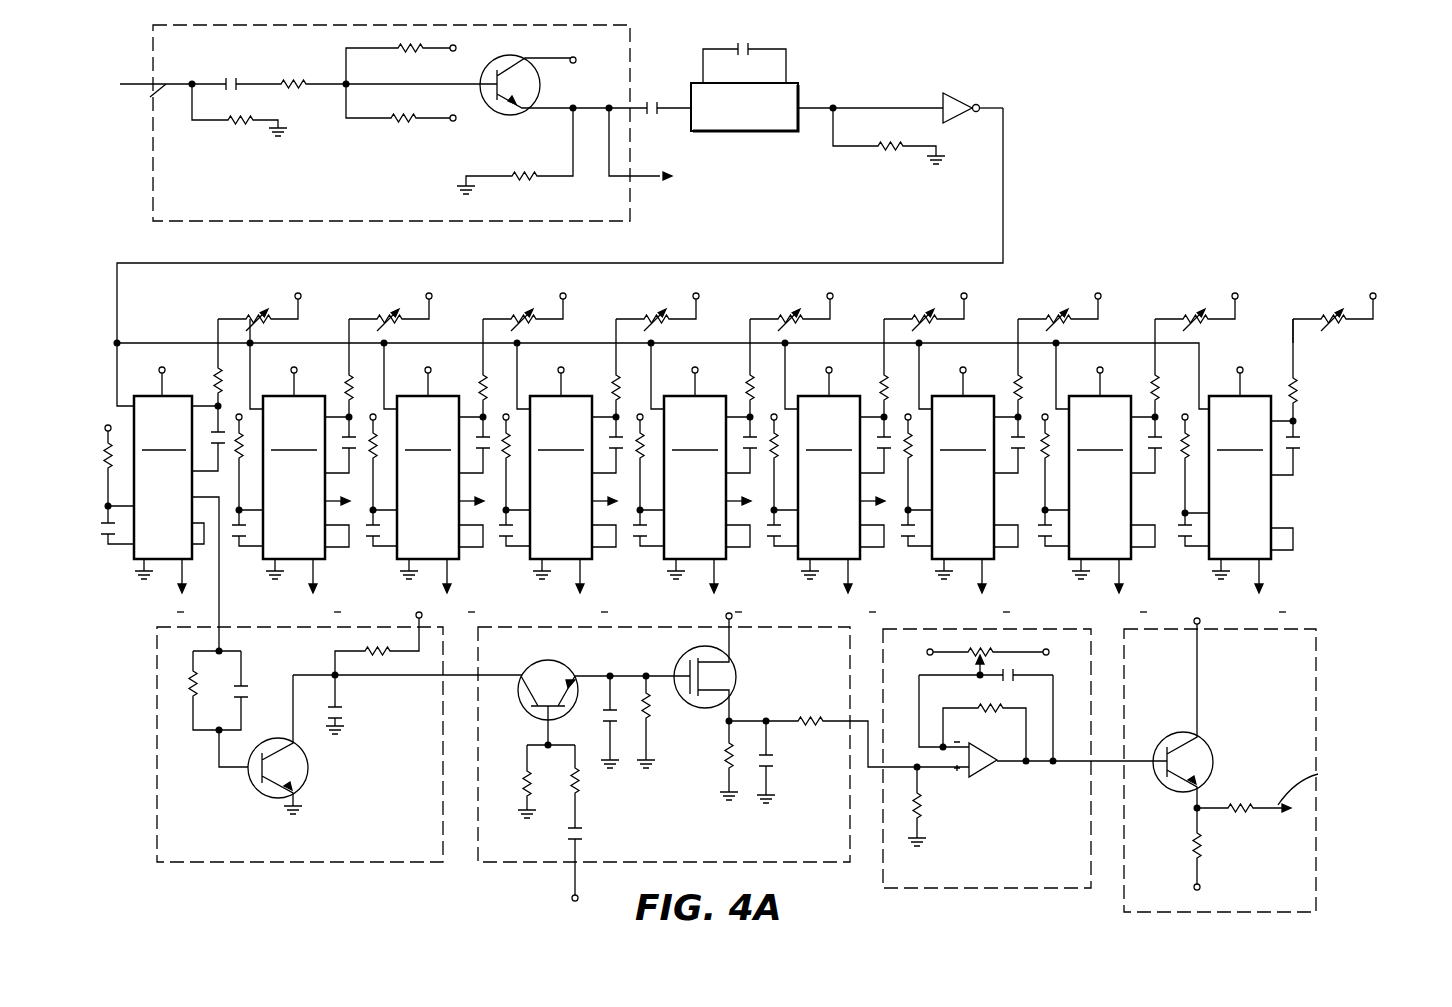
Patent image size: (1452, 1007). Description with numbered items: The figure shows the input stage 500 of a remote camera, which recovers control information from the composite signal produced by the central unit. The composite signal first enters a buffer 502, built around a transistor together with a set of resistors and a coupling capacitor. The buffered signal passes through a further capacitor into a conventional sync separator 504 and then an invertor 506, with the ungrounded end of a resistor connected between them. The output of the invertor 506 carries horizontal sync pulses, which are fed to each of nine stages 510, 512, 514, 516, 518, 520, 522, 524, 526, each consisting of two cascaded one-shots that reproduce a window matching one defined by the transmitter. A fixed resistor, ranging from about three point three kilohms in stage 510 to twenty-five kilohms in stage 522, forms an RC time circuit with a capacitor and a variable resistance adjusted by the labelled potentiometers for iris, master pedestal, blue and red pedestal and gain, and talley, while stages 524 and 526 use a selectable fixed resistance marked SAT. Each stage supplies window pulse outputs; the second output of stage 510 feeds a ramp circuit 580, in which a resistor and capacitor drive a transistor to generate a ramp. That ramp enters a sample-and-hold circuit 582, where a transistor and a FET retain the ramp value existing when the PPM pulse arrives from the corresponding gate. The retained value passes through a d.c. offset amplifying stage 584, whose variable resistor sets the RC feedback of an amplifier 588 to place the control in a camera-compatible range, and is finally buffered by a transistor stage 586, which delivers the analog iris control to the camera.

The input stage 500 is at (1198, 250).
The buffer 502 is at (152, 27).
The sync separator 504 is at (798, 83).
The invertor 506 is at (950, 97).
The stage 510 is at (178, 459).
The stage 512 is at (332, 440).
The stage 514 is at (466, 440).
The stage 516 is at (599, 440).
The stage 518 is at (733, 440).
The stage 520 is at (867, 440).
The stage 522 is at (1001, 440).
The stage 524 is at (1138, 450).
The stage 526 is at (1277, 440).
The ramp circuit 580 is at (152, 680).
The sample-and-hold circuit 582 is at (477, 833).
The d.c. offset amplifying stage 584 is at (960, 888).
The transistor stage 586 is at (1318, 660).
The amplifier 588 is at (977, 776).